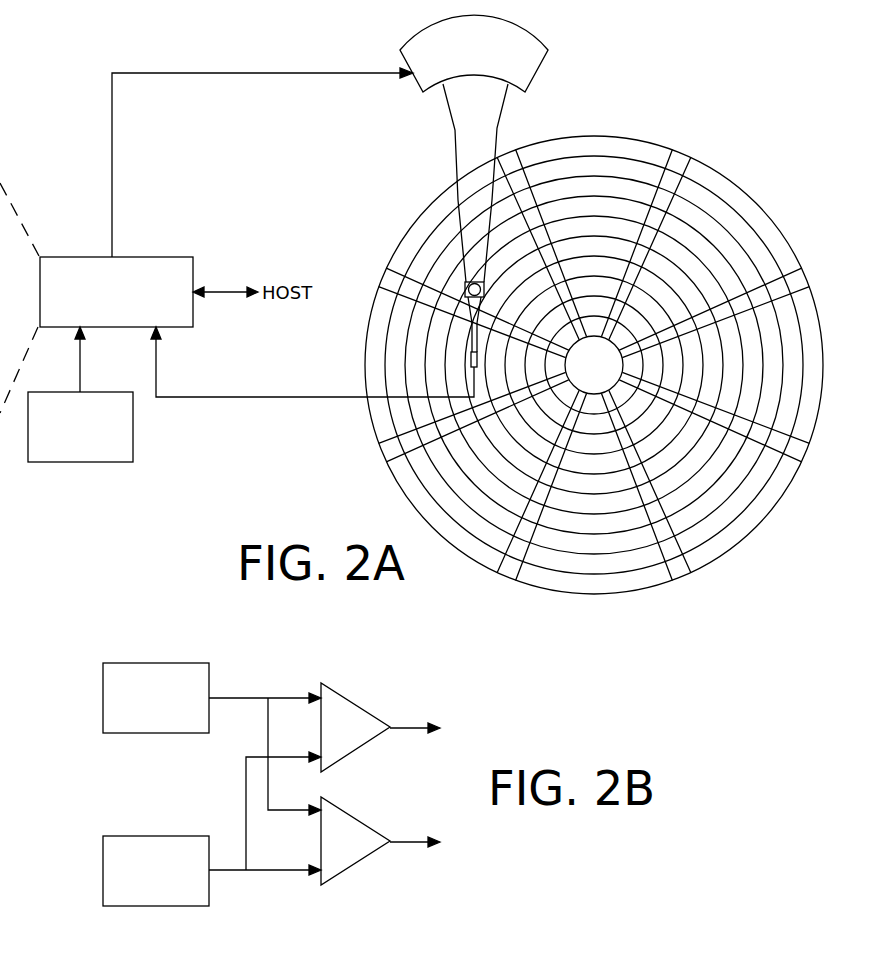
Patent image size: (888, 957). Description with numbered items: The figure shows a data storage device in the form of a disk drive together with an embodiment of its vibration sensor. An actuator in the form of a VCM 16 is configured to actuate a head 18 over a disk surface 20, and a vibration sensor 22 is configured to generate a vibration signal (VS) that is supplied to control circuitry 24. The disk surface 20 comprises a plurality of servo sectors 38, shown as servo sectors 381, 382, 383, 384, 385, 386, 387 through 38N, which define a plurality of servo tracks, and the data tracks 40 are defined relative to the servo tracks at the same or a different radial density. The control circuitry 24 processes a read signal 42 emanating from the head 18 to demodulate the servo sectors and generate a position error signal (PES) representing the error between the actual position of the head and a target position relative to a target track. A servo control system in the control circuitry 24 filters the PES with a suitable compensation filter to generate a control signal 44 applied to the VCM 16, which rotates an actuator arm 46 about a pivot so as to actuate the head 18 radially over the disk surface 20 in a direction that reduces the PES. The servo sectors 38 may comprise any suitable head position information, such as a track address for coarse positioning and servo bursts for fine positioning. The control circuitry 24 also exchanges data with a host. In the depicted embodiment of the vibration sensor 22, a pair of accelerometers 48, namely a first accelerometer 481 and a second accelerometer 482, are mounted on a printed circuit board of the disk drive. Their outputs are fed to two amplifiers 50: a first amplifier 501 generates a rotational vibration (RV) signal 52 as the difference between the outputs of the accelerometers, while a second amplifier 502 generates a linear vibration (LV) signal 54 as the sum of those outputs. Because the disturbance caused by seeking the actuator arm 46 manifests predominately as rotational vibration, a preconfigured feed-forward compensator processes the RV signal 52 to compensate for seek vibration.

In FIG. 2A, the voice coil motor 16 is at (423, 90).
In FIG. 2A, the head 18 is at (458, 369).
In FIG. 2A, the disk surface 20 is at (596, 360).
In FIG. 2A, the vibration sensor 22 is at (80, 462).
In FIG. 2A, the control circuitry 24 is at (156, 257).
In FIG. 2A, the servo sectors 38 is at (596, 374).
In FIG. 2A, the servo sector 381 is at (685, 157).
In FIG. 2A, the servo sector 382 is at (806, 280).
In FIG. 2A, the servo sector 383 is at (806, 452).
In FIG. 2A, the servo sector 384 is at (676, 580).
In FIG. 2A, the servo sector 385 is at (500, 578).
In FIG. 2A, the servo sector 386 is at (383, 448).
In FIG. 2A, the servo sector 387 is at (386, 272).
In FIG. 2A, the servo sector 38N is at (503, 156).
In FIG. 2A, the data tracks 40 is at (583, 158).
In FIG. 2A, the read signal 42 is at (247, 398).
In FIG. 2A, the control signal 44 is at (112, 156).
In FIG. 2A, the actuator arm 46 is at (456, 158).
In FIG. 2B, the accelerometers 48 is at (156, 761).
In FIG. 2B, the first accelerometer 481 is at (148, 663).
In FIG. 2B, the second accelerometer 482 is at (150, 836).
In FIG. 2B, the amplifiers 50 is at (355, 772).
In FIG. 2B, the first amplifier 501 is at (358, 706).
In FIG. 2B, the second amplifier 502 is at (358, 820).
In FIG. 2B, the rotational vibration (RV) signal 52 is at (405, 727).
In FIG. 2B, the linear vibration (LV) signal 54 is at (405, 841).